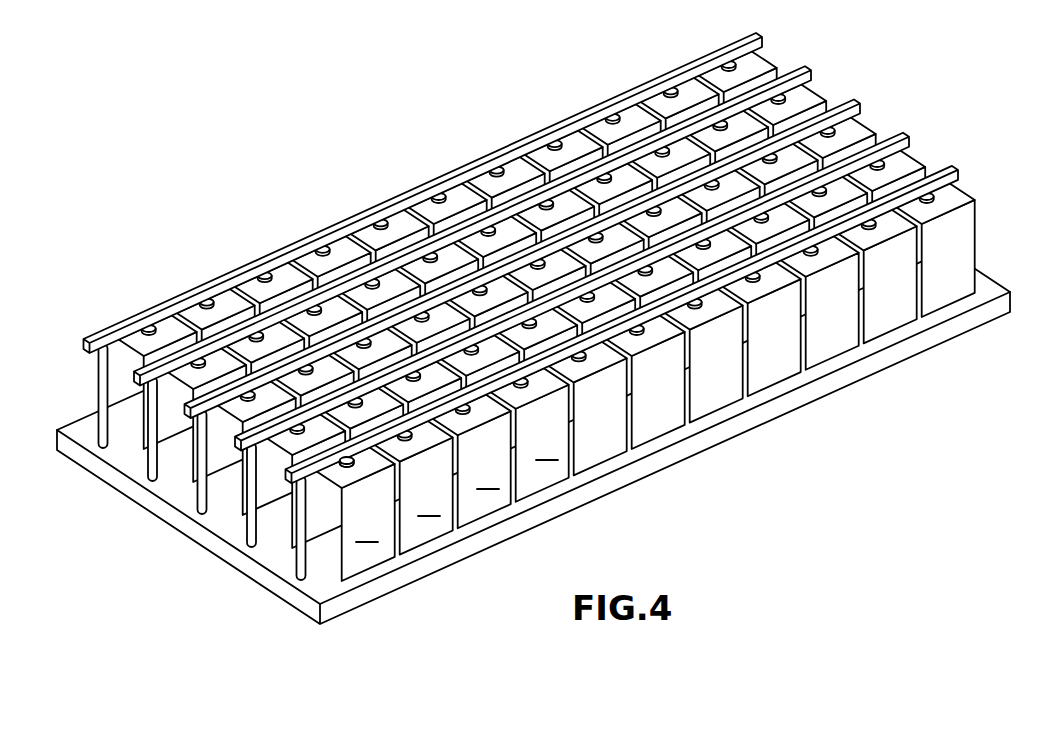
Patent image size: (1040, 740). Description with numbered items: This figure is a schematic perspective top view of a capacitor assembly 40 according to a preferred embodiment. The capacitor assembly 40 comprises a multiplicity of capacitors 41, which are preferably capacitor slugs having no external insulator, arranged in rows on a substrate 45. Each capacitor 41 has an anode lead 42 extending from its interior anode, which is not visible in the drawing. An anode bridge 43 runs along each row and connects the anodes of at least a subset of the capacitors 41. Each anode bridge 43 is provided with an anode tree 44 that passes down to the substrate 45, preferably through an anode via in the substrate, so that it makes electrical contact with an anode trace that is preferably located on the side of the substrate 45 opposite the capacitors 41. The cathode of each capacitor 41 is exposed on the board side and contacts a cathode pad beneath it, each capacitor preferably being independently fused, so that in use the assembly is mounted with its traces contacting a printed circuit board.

The capacitor assembly 40 is at (533, 352).
The capacitor 41 is at (547, 316).
The anode lead 42 is at (346, 468).
The anode bridge 43 is at (521, 258).
The anode tree 44 is at (185, 490).
The substrate 45 is at (724, 456).